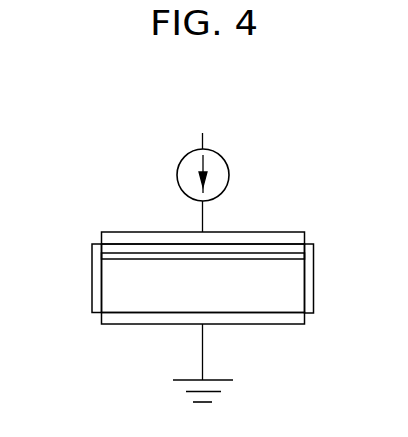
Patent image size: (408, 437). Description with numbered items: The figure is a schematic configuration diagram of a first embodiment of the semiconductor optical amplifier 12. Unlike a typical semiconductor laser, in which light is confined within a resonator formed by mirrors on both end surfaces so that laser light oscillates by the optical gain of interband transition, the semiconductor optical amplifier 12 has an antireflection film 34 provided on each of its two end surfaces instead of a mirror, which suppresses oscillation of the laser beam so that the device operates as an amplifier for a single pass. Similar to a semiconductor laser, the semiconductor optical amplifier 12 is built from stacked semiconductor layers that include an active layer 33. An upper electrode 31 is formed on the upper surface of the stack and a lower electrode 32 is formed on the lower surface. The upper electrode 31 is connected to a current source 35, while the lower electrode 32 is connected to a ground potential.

The semiconductor optical amplifier 12 is at (208, 105).
The upper electrode 31 is at (250, 240).
The lower electrode 32 is at (265, 320).
The active layer 33 is at (150, 258).
The antireflection film 34 is at (93, 287).
The current source 35 is at (223, 154).